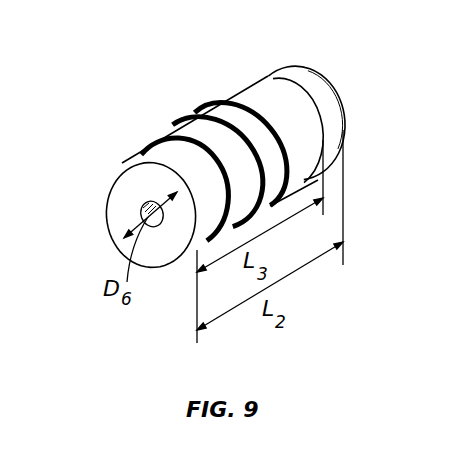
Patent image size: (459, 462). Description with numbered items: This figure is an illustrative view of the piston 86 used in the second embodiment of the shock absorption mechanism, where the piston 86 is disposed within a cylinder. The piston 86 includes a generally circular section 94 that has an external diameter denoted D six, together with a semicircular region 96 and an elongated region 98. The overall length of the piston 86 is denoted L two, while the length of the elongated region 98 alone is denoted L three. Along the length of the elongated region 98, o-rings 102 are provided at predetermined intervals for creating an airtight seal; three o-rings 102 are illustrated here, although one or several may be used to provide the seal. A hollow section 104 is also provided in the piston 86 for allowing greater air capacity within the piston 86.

The piston 86 is at (221, 186).
The generally circular section 94 is at (122, 181).
The semicircular region 96 is at (323, 98).
The elongated region 98 is at (230, 88).
The o-rings 102 is at (207, 100).
The hollow section 104 is at (140, 212).